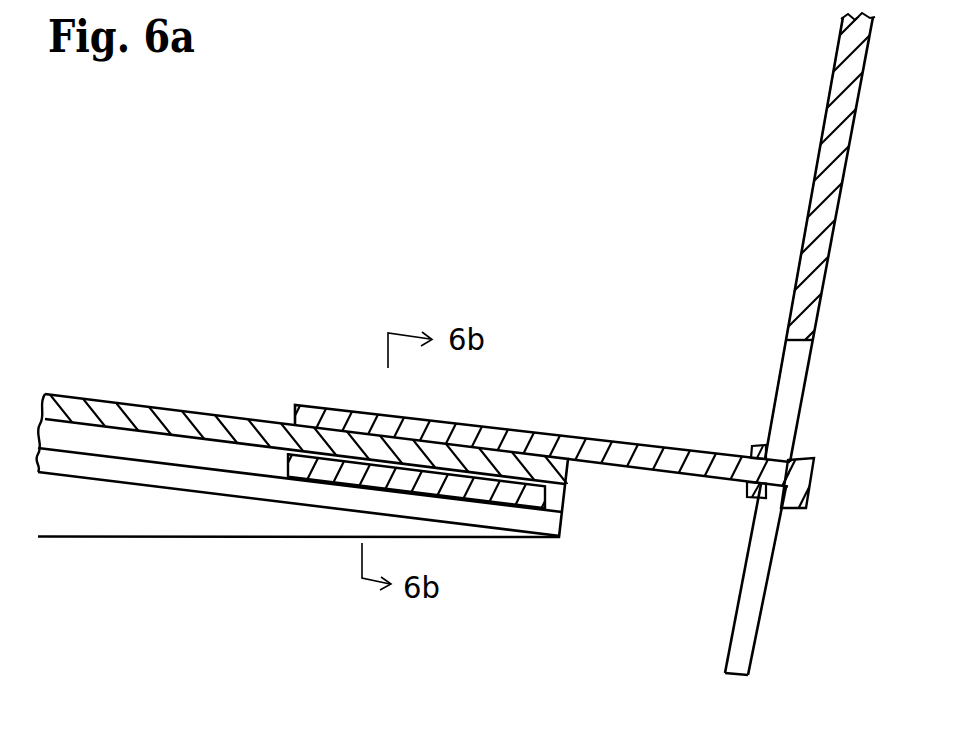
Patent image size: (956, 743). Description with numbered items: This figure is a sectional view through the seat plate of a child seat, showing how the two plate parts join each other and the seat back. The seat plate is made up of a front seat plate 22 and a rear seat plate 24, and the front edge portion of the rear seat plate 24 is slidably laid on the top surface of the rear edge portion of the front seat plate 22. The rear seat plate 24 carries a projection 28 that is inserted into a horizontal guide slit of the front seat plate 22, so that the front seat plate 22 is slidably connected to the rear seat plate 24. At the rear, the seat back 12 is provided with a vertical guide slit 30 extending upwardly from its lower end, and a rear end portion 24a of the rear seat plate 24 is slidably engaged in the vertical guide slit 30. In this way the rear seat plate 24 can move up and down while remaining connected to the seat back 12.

The seat back 12 is at (831, 109).
The front seat plate 22 is at (127, 403).
The rear seat plate 24 is at (528, 432).
The rear end portion 24a is at (812, 480).
The projection 28 is at (468, 487).
The vertical guide slit 30 is at (779, 391).